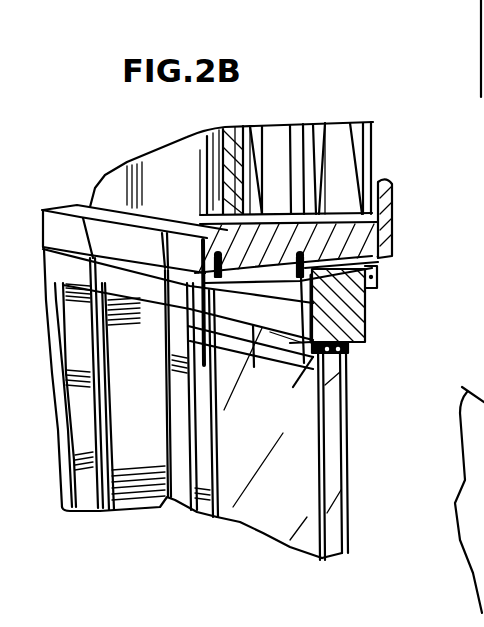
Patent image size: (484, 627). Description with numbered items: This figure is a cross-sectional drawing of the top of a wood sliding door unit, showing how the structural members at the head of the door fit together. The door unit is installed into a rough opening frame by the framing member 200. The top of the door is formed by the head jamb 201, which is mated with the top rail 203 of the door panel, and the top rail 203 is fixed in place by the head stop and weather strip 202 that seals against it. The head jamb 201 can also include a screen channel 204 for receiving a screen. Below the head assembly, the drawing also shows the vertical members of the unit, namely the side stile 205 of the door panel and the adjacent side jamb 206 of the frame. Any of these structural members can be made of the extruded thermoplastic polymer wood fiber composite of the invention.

The framing member 200 is at (345, 172).
The head jamb 201 is at (391, 220).
The head stop and weather strip 202 is at (358, 296).
The top rail 203 is at (343, 322).
The screen channel 204 is at (228, 303).
The side stile 205 is at (197, 417).
The side jamb 206 is at (137, 483).